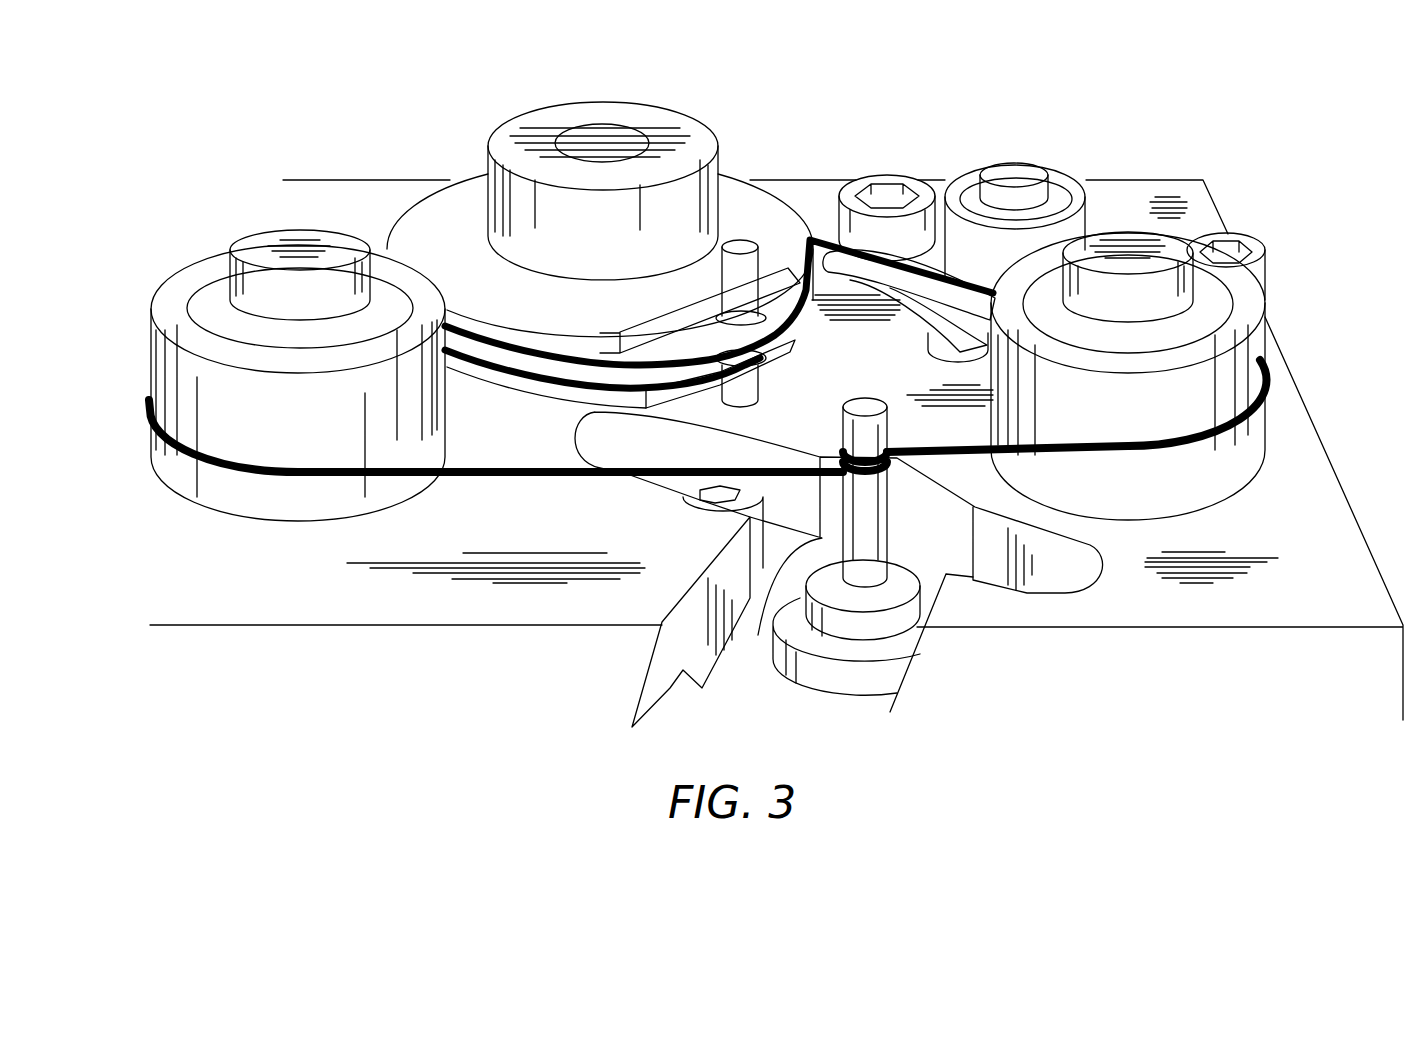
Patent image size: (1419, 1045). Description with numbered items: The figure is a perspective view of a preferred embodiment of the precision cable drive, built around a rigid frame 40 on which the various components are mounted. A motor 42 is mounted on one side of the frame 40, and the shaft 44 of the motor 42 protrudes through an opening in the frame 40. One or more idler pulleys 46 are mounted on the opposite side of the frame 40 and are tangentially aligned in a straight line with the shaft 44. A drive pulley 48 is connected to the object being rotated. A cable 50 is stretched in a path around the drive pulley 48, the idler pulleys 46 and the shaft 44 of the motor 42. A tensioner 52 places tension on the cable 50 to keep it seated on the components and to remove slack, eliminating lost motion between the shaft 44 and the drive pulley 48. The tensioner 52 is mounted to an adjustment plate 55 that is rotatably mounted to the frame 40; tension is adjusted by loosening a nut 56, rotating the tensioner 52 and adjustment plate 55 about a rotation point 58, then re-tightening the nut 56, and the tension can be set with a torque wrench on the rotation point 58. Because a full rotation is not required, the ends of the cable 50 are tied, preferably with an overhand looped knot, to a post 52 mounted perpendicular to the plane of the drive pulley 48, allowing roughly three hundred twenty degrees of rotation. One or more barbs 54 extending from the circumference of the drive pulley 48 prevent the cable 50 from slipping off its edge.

The rigid frame 40 is at (1308, 462).
The motor 42 is at (846, 676).
The shaft 44 is at (865, 543).
The idler pulleys 46 is at (178, 292).
The drive pulley 48 is at (697, 143).
The cable 50 is at (510, 478).
The tensioner 52 is at (741, 246).
The barbs 54 is at (796, 283).
The adjustment plate 55 is at (877, 293).
The nut 56 is at (910, 183).
The rotation point 58 is at (1243, 240).